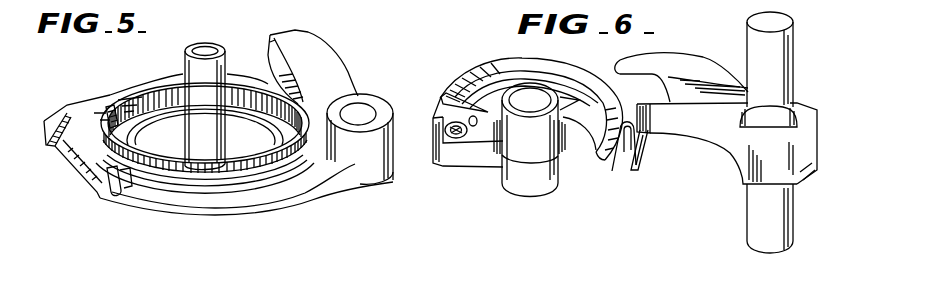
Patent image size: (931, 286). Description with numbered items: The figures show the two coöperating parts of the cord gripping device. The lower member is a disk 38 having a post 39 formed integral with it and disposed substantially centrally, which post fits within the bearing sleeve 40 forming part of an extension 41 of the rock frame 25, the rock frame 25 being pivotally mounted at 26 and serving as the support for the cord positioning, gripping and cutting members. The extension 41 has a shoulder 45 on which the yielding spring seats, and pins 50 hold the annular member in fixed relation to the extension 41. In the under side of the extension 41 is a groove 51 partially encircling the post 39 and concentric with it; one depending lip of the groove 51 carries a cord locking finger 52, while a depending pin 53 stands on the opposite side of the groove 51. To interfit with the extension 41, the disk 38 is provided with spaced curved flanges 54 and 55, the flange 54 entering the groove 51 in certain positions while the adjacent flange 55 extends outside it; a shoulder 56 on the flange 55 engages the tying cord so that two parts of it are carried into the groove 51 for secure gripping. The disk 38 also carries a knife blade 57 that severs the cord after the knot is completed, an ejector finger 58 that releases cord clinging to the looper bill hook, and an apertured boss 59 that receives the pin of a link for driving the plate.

In FIG. 5, the disk 38 is at (243, 167).
In FIG. 5, the post 39 is at (205, 106).
In FIG. 5, the curved flange 54 is at (130, 188).
In FIG. 5, the curved flange 55 is at (110, 186).
In FIG. 5, the shoulder 56 is at (110, 106).
In FIG. 5, the knife blade 57 is at (58, 147).
In FIG. 5, the ejector finger 58 is at (313, 67).
In FIG. 5, the apertured boss 59 is at (360, 139).
In FIG. 6, the extension 41 is at (487, 67).
In FIG. 6, the bearing sleeve 40 is at (530, 140).
In FIG. 6, the shoulder 45 is at (503, 162).
In FIG. 6, the pins 50 is at (442, 102).
In FIG. 6, the groove 51 is at (614, 168).
In FIG. 6, the cord locking finger 52 is at (591, 134).
In FIG. 6, the depending pin 53 is at (641, 160).
In FIG. 6, the rock frame 25 is at (808, 103).
In FIG. 6, the pivot 26 is at (770, 132).